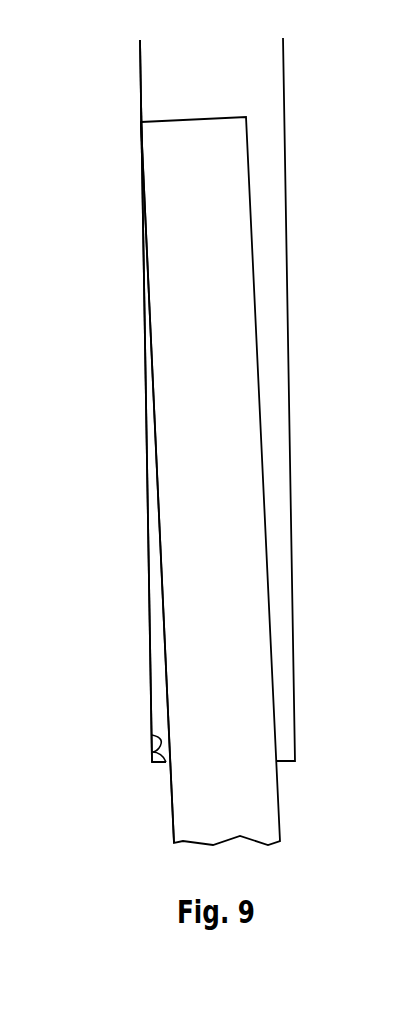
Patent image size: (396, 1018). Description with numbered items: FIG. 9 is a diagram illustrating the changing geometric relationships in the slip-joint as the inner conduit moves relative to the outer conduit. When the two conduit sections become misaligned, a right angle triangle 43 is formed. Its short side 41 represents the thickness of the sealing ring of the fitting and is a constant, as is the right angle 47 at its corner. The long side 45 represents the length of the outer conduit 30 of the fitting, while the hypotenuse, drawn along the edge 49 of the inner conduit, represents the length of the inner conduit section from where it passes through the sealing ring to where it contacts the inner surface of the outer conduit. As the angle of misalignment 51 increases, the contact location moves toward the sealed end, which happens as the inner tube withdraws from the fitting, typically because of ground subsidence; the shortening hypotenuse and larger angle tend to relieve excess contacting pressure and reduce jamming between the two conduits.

The plate 30 is at (181, 117).
The short side 41 is at (157, 767).
The right angle triangle 43 is at (137, 623).
The long side 45 is at (145, 518).
The right angle 47 is at (151, 734).
The plate edge 49 is at (162, 603).
The angle of misalignment 51 is at (135, 128).